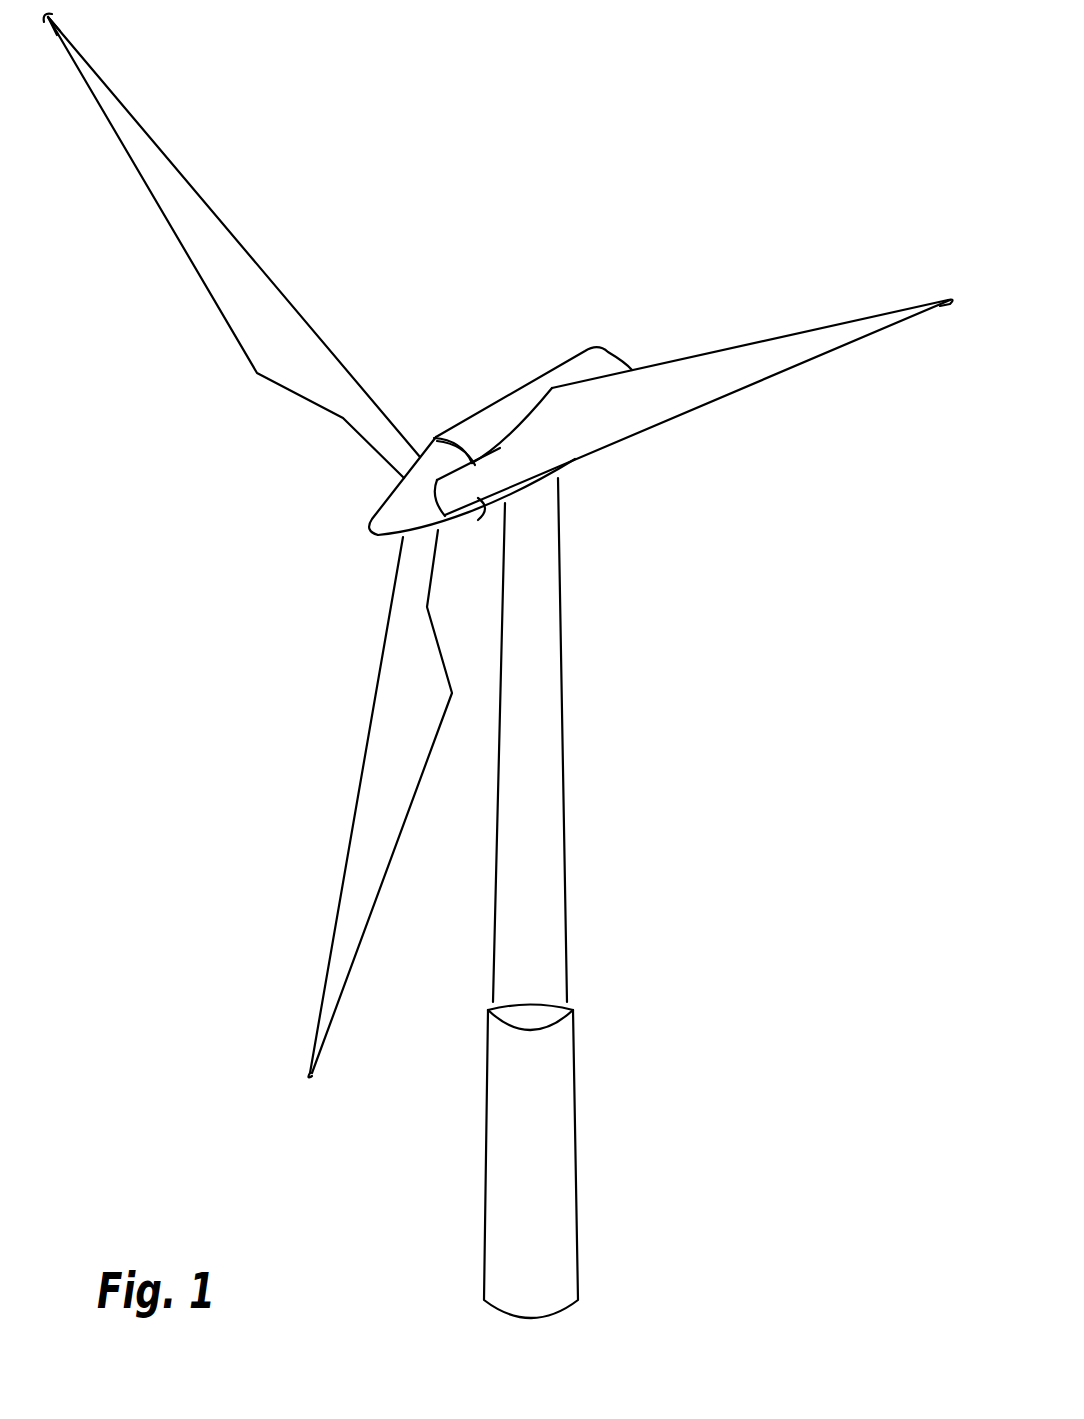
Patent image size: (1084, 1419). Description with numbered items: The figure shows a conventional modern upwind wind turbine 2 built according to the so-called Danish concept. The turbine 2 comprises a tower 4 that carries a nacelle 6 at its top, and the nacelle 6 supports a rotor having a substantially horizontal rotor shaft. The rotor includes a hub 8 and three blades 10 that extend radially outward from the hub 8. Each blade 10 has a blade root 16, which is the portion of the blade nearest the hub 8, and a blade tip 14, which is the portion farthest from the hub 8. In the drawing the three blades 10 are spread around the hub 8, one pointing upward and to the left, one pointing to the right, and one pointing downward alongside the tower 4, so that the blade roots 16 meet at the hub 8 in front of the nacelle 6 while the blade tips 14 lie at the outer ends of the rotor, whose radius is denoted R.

The wind turbine 2 is at (498, 666).
The tower 4 is at (550, 744).
The nacelle 6 is at (492, 417).
The hub 8 is at (388, 512).
The blade 10 is at (268, 343).
The blade tip 14 is at (95, 78).
The blade root 16 is at (398, 458).